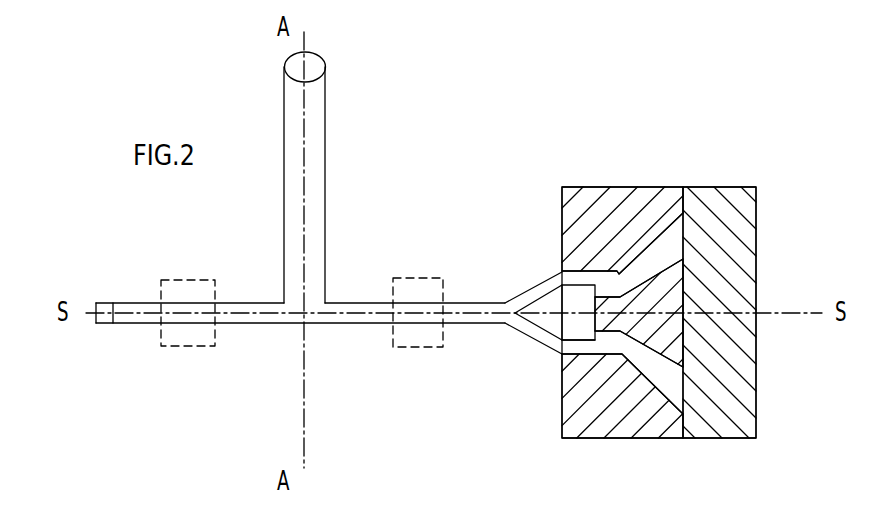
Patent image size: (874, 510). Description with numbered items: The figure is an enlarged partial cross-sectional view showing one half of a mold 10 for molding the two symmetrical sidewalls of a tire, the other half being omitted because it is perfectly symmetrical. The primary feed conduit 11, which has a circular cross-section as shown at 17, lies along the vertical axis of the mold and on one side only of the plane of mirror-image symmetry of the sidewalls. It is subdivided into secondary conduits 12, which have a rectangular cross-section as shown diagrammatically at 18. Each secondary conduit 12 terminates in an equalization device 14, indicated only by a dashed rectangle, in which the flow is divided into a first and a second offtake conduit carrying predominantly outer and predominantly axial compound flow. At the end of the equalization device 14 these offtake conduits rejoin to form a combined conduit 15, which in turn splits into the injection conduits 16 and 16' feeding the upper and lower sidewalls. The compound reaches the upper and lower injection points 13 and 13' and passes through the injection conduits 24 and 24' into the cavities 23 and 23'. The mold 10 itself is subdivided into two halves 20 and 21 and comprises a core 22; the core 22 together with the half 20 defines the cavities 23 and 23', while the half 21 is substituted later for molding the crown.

The mold 10 is at (685, 186).
The primary feed conduit 11 is at (329, 113).
The secondary conduits 12 is at (274, 313).
The injection point 13 is at (528, 258).
The injection point 13' is at (528, 375).
The equalization device 14 is at (392, 346).
The combined conduit 15 is at (476, 315).
The injection conduit 16 is at (512, 264).
The injection conduit 16' is at (511, 372).
The circular cross-section 17 is at (313, 63).
The rectangular cross-section 18 is at (96, 327).
The mold half 20 is at (663, 186).
The mold half 21 is at (737, 186).
The core 22 is at (675, 292).
The cavity 23 is at (685, 255).
The cavity 23' is at (690, 372).
The injection conduit 24 is at (589, 230).
The injection conduit 24' is at (595, 415).